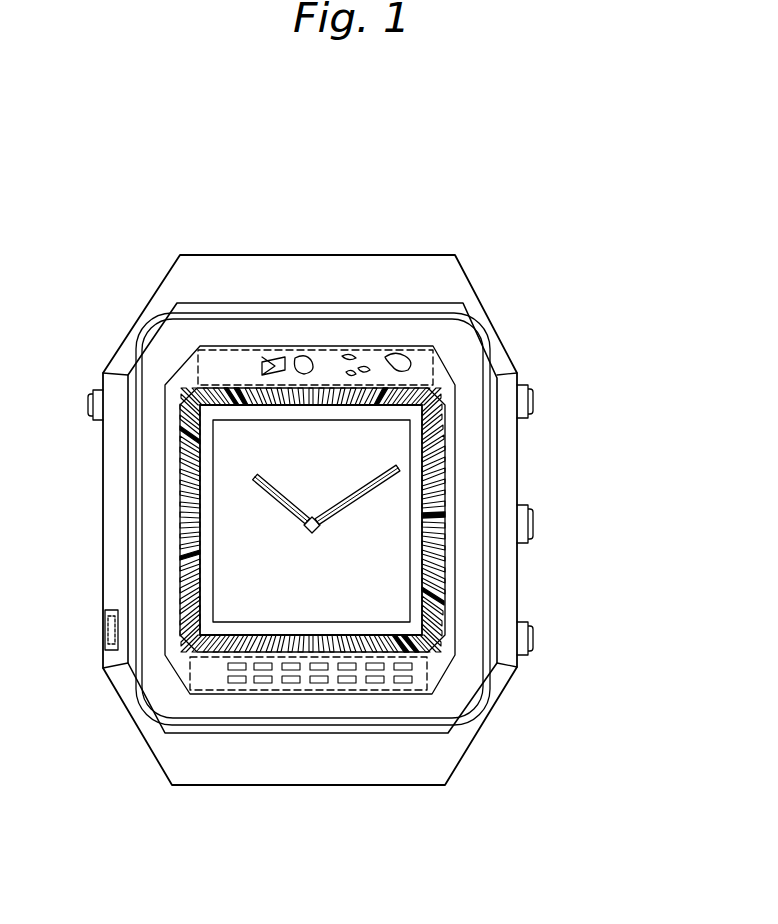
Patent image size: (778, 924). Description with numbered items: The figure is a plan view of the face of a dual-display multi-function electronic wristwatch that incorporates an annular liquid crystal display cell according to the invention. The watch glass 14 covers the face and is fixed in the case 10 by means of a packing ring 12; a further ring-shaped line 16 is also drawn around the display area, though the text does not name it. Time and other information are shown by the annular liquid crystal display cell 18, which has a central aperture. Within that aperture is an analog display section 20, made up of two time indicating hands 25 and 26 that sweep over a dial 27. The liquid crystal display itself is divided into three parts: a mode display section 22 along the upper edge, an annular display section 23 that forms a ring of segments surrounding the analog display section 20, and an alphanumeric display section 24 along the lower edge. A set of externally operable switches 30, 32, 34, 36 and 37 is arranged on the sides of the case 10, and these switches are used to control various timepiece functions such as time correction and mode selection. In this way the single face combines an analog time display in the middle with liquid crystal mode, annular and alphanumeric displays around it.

The case 10 is at (418, 268).
The packing ring 12 is at (143, 737).
The watch glass 14 is at (155, 675).
The cover glass 16 is at (172, 606).
The annular liquid crystal display cell 18 is at (447, 455).
The analog display section 20 is at (390, 505).
The mode display section 22 is at (298, 352).
The annular display section 23 is at (180, 549).
The alphanumeric display section 24 is at (303, 692).
The time indicating hand 25 is at (357, 488).
The time indicating hand 26 is at (295, 479).
The dial 27 is at (393, 588).
The externally operable switch 30 is at (533, 638).
The externally operable switch 32 is at (530, 528).
The externally operable switch 34 is at (535, 405).
The externally operable switch 36 is at (102, 392).
The externally operable switch 37 is at (104, 630).